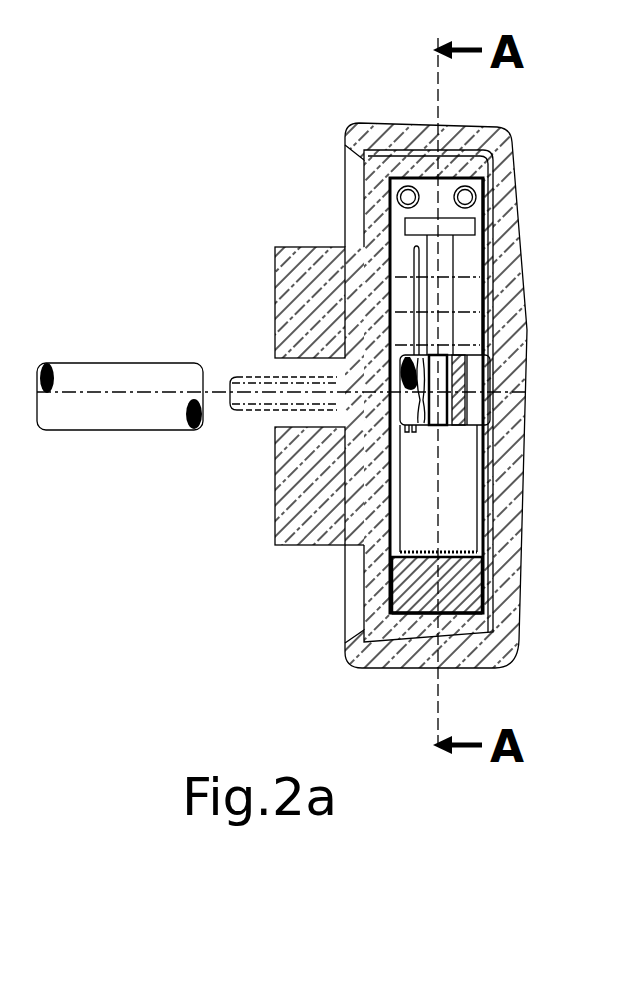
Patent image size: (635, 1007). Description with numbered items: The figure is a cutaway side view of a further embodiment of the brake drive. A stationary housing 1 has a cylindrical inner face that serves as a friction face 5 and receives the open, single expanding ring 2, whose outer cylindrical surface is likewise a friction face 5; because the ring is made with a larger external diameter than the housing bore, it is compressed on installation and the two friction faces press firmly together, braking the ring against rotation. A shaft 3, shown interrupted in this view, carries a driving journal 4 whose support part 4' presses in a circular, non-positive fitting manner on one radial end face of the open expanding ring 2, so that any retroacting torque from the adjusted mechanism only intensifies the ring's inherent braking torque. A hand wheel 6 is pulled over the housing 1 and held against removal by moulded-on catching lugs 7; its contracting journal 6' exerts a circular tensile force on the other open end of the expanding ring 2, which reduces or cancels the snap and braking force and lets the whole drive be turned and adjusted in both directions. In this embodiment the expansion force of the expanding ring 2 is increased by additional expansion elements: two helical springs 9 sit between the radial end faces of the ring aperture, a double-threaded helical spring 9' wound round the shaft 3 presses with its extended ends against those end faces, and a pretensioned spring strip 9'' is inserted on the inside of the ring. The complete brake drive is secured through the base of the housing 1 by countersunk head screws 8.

The housing 1 is at (322, 488).
The expanding ring 2 is at (438, 587).
The shaft 3 is at (135, 410).
The driving journal 4 is at (523, 271).
The support part 4' is at (507, 186).
The friction face 5 is at (452, 612).
The hand wheel 6 is at (480, 395).
The contracting journal 6' is at (544, 269).
The catching lug 7 is at (355, 637).
The countersunk head screw 8 is at (303, 402).
The helical spring 9 is at (489, 345).
The double-threaded helical spring 9' is at (521, 292).
The spring strip 9'' is at (516, 490).